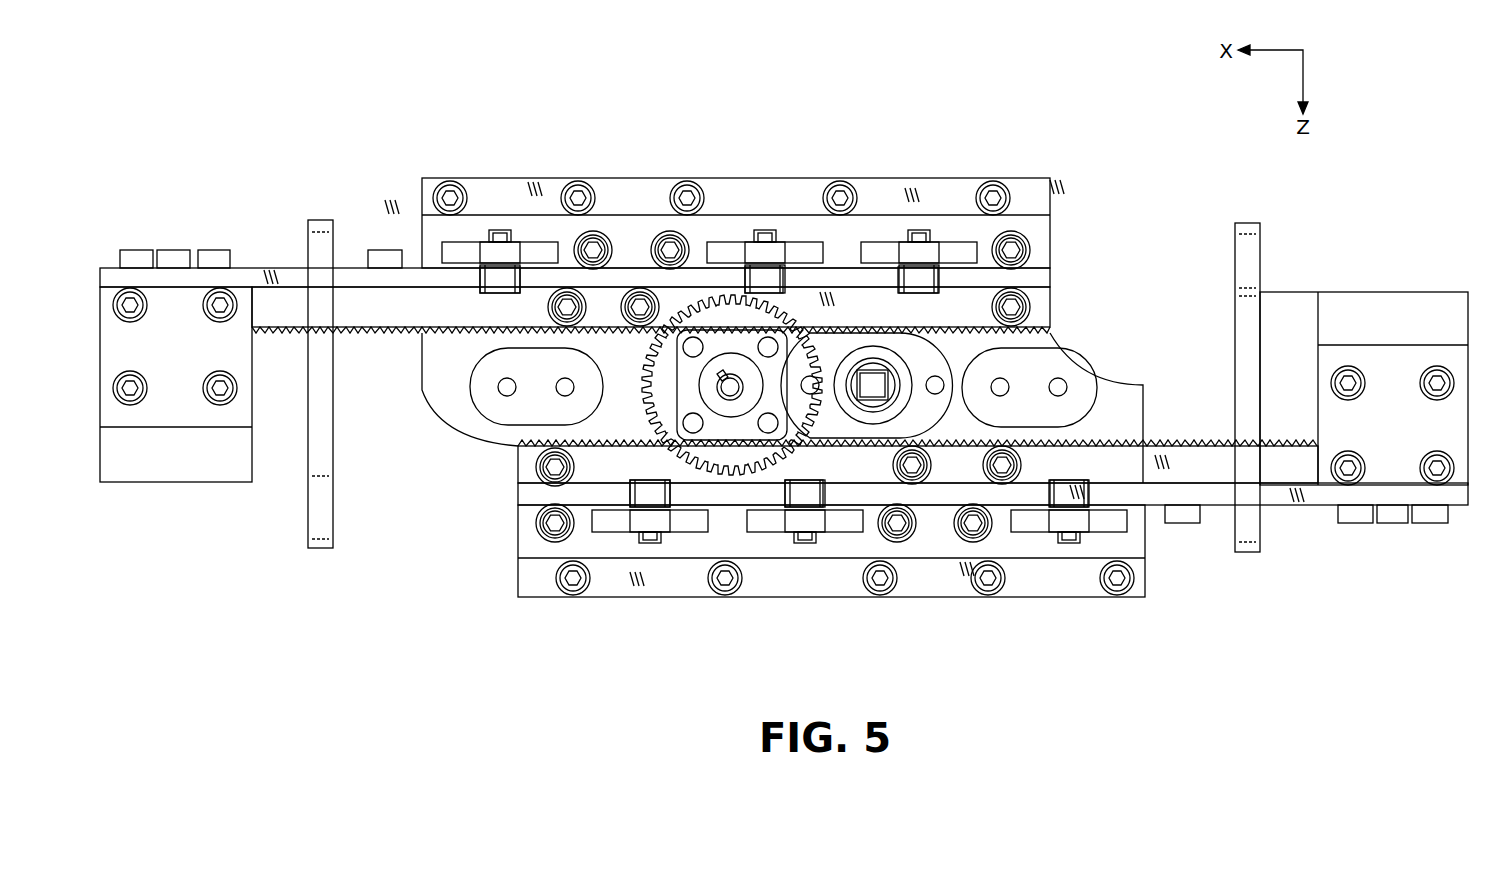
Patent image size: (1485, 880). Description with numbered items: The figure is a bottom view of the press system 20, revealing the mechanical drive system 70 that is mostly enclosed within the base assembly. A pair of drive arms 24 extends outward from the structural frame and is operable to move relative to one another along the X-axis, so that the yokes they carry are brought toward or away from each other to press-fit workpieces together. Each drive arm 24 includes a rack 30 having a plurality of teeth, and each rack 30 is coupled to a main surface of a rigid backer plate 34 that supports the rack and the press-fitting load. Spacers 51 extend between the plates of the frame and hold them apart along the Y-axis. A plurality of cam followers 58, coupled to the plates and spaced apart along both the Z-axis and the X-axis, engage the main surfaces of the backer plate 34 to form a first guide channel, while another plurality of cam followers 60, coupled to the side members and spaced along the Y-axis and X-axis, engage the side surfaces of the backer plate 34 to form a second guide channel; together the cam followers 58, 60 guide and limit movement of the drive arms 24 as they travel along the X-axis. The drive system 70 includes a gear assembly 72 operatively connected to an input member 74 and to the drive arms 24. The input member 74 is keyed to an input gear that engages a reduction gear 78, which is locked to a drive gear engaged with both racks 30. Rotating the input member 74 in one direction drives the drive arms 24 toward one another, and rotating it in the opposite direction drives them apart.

The press system 20 is at (866, 74).
The drive arms 24 is at (260, 222).
The backer plate 34 is at (348, 276).
The rack 30 is at (360, 302).
The cam followers 58 is at (670, 231).
The cam followers 60 is at (755, 278).
The gear assembly 72 is at (838, 252).
The mechanical drive system 70 is at (727, 512).
The spacers 51 is at (1048, 363).
The reduction gear 78 is at (716, 458).
The input member 74 is at (873, 392).